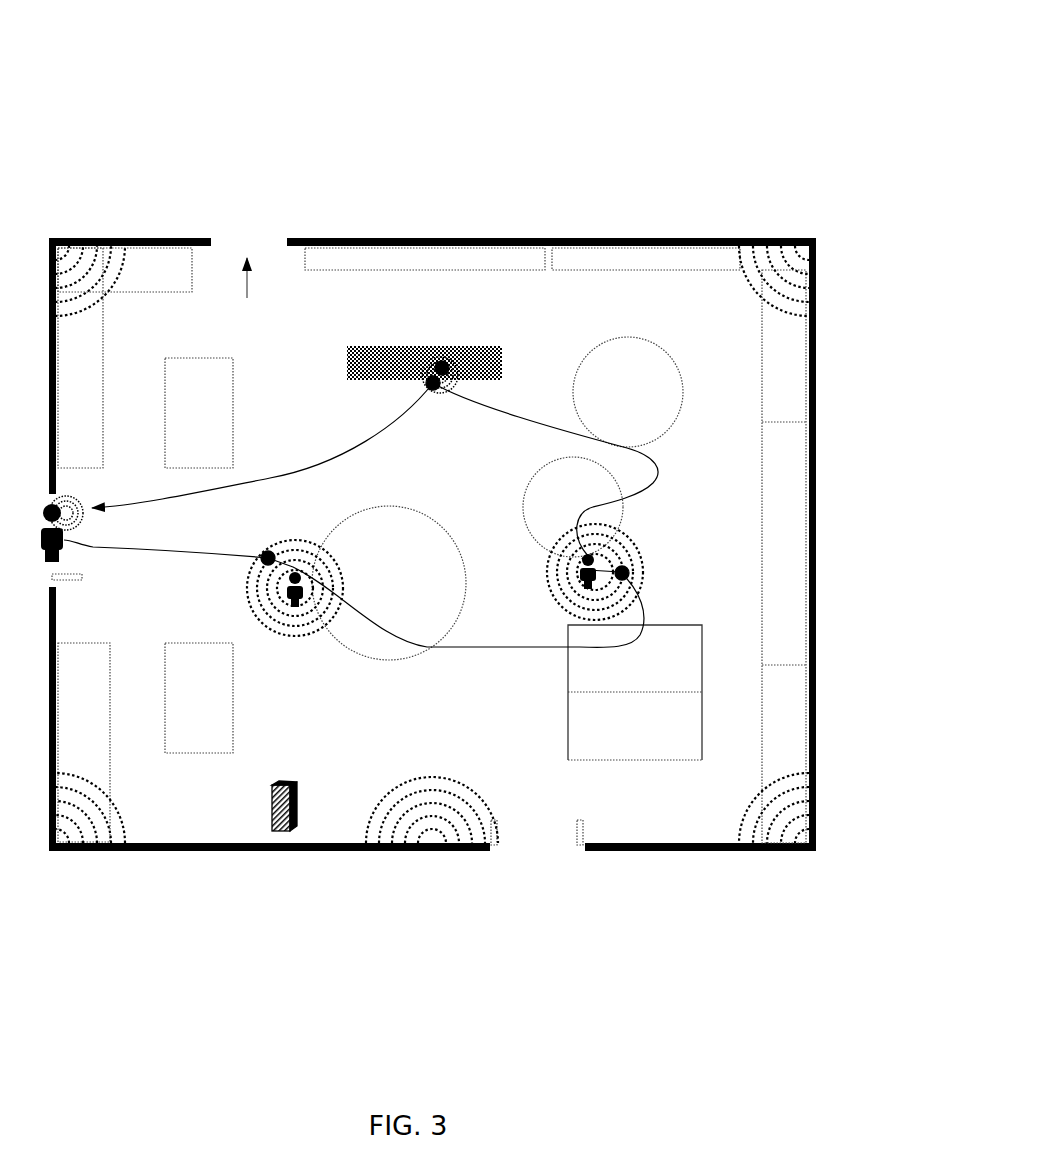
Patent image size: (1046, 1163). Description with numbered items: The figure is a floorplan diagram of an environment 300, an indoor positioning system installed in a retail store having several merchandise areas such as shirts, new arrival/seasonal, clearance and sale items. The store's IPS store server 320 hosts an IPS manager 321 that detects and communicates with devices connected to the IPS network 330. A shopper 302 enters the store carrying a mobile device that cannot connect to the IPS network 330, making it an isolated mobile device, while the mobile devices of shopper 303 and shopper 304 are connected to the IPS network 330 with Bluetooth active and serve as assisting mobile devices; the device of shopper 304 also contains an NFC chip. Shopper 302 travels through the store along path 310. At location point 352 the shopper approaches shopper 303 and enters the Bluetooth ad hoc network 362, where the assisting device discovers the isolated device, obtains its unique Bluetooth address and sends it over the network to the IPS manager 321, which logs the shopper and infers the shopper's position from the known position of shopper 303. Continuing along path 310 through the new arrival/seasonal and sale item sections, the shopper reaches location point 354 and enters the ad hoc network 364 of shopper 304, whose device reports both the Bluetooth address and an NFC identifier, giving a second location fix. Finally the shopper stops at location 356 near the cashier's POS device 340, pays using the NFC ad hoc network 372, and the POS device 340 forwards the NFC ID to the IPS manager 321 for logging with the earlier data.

The environment 300 is at (640, 72).
The shopper 302 is at (48, 506).
The shopper 303 is at (298, 600).
The shopper 304 is at (584, 584).
The path 310 is at (258, 482).
The IPS store server 320 is at (284, 787).
The IPS manager 321 is at (280, 806).
The IPS network 330 is at (110, 298).
The POS device 340 is at (450, 362).
The location point 352 is at (268, 552).
The location point 354 is at (629, 572).
The location 356 is at (434, 392).
The Bluetooth ad hoc network 362 is at (246, 598).
The ad hoc network 364 is at (545, 568).
The NFC ad hoc network 372 is at (424, 362).